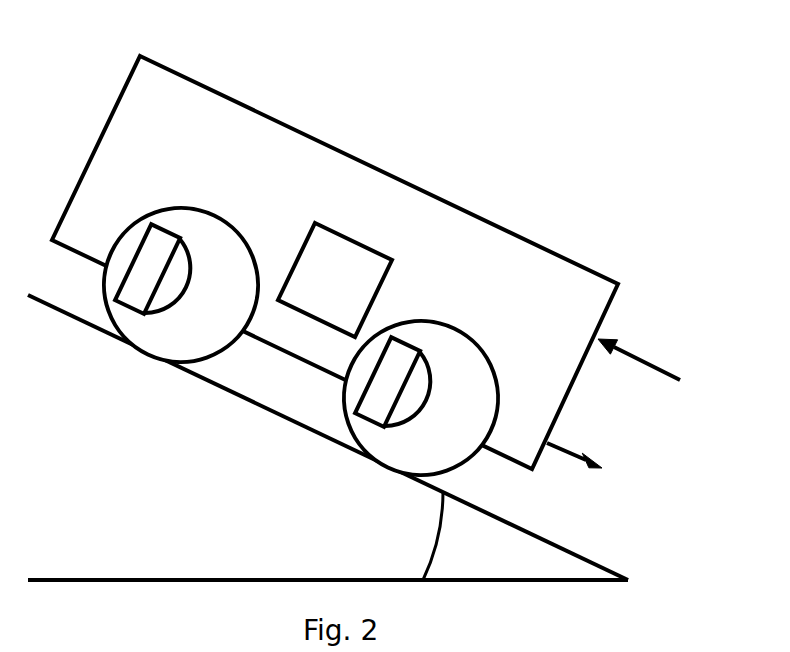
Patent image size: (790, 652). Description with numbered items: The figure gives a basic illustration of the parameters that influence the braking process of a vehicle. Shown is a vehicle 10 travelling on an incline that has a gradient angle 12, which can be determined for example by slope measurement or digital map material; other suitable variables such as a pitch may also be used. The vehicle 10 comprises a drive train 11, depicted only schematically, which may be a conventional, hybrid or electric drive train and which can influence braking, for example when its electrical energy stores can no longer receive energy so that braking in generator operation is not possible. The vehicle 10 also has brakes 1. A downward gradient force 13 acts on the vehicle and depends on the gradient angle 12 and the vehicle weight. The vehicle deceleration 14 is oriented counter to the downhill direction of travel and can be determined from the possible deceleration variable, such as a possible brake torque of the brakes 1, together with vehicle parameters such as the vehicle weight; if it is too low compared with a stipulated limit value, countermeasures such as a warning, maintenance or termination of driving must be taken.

The brakes 1 is at (177, 227).
The vehicle 10 is at (262, 113).
The drive train 11 is at (306, 238).
The gradient angle 12 is at (420, 513).
The downward gradient force 13 is at (572, 453).
The vehicle deceleration 14 is at (627, 352).